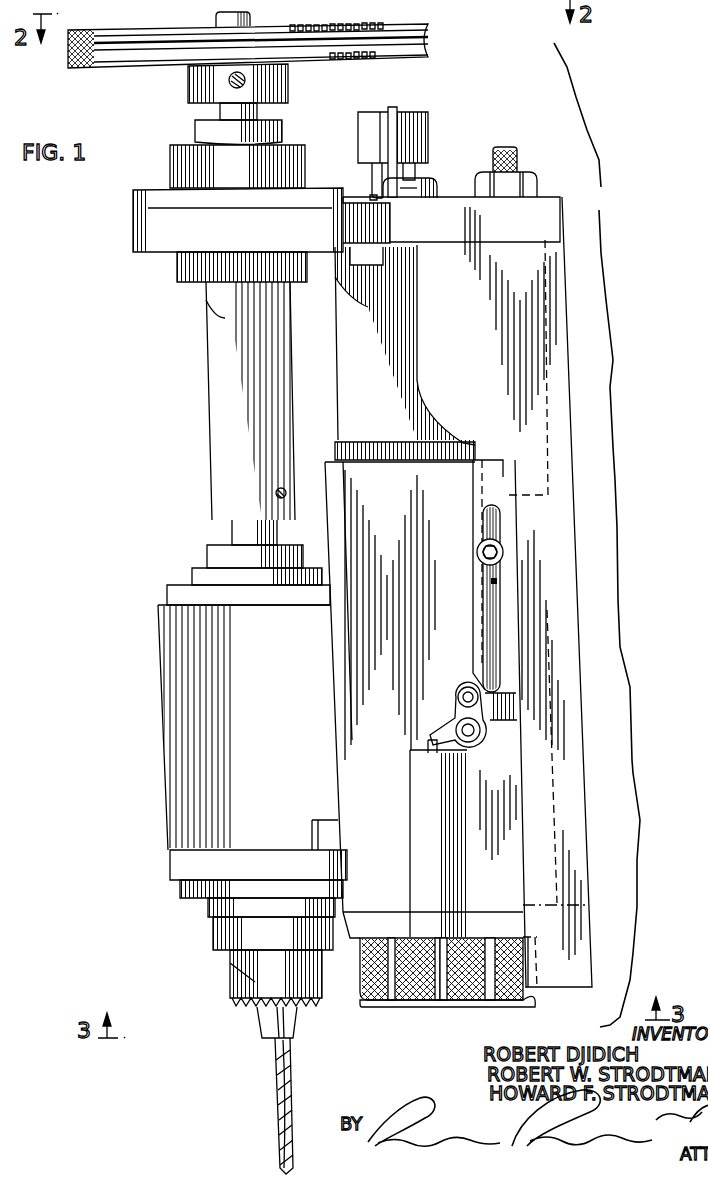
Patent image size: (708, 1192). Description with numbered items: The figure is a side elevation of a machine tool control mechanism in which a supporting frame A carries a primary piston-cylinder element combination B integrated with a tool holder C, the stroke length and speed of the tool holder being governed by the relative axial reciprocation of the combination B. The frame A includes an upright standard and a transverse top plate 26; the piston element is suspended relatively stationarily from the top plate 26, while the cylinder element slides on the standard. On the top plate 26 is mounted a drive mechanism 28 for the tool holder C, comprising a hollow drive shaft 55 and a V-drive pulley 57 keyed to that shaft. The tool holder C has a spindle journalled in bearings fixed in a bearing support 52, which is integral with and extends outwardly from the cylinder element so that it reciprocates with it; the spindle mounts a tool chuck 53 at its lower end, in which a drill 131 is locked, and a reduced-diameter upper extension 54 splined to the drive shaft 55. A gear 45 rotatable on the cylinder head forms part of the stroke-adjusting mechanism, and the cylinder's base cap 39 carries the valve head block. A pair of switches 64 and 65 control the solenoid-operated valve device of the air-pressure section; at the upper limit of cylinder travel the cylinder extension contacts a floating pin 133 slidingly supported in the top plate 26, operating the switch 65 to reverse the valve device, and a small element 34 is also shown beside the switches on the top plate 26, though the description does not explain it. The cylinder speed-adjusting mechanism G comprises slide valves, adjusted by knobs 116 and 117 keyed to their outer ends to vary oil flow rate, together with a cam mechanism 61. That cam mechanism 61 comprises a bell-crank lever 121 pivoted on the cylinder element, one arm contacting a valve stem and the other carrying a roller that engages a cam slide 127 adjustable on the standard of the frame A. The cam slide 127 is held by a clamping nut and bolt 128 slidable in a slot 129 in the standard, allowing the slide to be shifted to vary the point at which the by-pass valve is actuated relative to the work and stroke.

The top plate 26 is at (554, 215).
The drive mechanism 28 is at (165, 168).
The switch actuator cap 34 is at (427, 180).
The base cap 39 is at (360, 928).
The gear 45 is at (337, 447).
The bearing support 52 is at (267, 714).
The tool chuck 53 is at (240, 980).
The reduced-diameter upper extension 54 is at (242, 533).
The hollow drive shaft 55 is at (213, 380).
The V-drive pulley 57 is at (133, 69).
The cam mechanism 61 is at (439, 716).
The switch 64 is at (428, 115).
The switch 65 is at (359, 134).
The knob 116 is at (388, 990).
The knob 117 is at (517, 997).
The bell-crank lever 121 is at (488, 740).
The cam slide 127 is at (484, 729).
The clamping nut and bolt 128 is at (500, 548).
The slot 129 is at (500, 583).
The drill 131 is at (273, 1095).
The floating pin 133 is at (377, 188).
The supporting frame A is at (530, 451).
The primary piston-cylinder element combination B is at (410, 604).
The tool holder C is at (183, 524).
The cylinder speed-adjusting mechanism G is at (453, 1039).